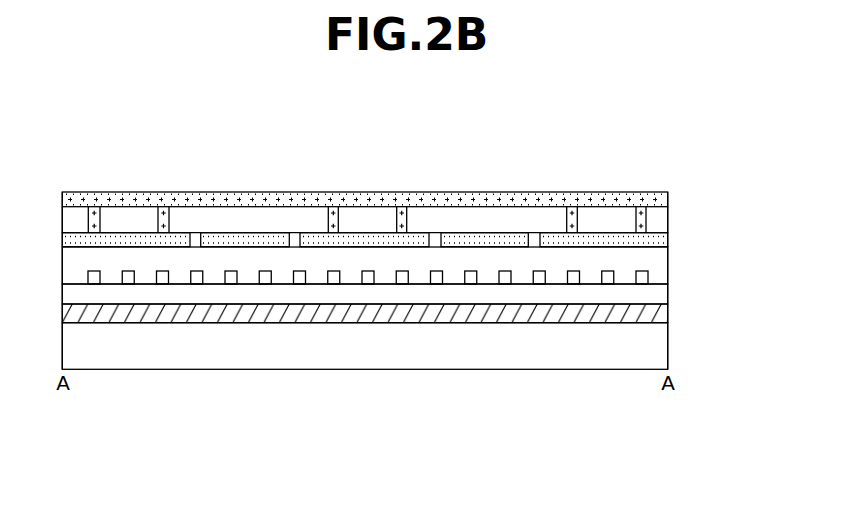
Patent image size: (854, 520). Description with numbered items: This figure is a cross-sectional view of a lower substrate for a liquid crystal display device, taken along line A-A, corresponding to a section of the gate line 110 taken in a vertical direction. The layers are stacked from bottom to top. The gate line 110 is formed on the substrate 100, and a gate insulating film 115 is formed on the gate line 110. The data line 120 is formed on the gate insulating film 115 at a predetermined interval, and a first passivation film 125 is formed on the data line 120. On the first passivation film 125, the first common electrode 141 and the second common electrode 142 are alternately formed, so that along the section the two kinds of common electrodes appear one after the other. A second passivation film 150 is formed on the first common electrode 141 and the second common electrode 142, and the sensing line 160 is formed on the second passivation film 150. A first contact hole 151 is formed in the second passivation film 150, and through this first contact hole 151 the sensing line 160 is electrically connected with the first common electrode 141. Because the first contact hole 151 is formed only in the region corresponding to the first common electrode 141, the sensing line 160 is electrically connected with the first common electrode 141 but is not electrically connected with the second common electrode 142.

The substrate 100 is at (662, 348).
The gate line 110 is at (662, 313).
The gate insulating film 115 is at (662, 295).
The data line 120 is at (641, 277).
The first passivation film 125 is at (662, 255).
The first common electrode 141 is at (123, 240).
The second common electrode 142 is at (245, 240).
The second passivation film 150 is at (662, 218).
The first contact hole 151 is at (572, 200).
The sensing line 160 is at (662, 196).